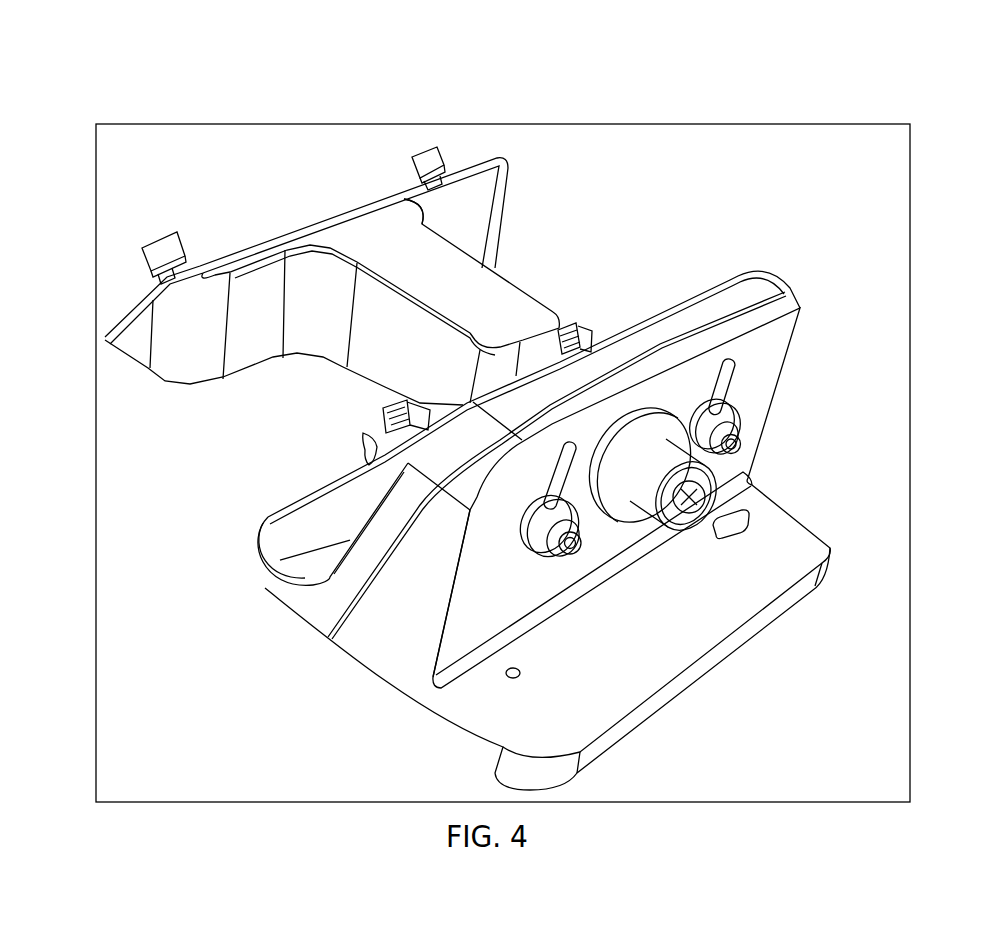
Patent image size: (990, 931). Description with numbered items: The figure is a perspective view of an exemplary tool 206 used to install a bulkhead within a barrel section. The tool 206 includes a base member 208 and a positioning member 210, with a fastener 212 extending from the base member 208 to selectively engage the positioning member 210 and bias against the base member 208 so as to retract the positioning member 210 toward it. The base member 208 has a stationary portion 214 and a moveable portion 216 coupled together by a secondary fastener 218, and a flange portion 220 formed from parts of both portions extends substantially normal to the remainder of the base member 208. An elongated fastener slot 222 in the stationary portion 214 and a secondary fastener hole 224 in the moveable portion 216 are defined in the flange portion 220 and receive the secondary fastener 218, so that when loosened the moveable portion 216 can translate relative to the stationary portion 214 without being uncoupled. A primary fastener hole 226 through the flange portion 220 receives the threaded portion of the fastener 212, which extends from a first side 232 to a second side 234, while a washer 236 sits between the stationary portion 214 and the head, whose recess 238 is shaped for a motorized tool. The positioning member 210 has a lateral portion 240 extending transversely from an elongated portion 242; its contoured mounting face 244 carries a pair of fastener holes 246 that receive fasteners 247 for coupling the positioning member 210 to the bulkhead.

The tool 206 is at (829, 104).
The base member 208 is at (828, 268).
The positioning member 210 is at (509, 140).
The fastener 212 is at (712, 346).
The stationary portion 214 is at (810, 552).
The moveable portion 216 is at (287, 531).
The secondary fastener 218 is at (742, 442).
The flange portion 220 is at (830, 308).
The fastener slot 222 is at (733, 388).
The secondary fastener hole 224 is at (380, 463).
The primary fastener hole 226 is at (666, 394).
The first side 232 is at (505, 590).
The second side 234 is at (694, 398).
The washer 236 is at (630, 520).
The recess 238 is at (690, 513).
The lateral portion 240 is at (353, 213).
The elongated portion 242 is at (488, 292).
The mounting face 244 is at (383, 213).
The fastener holes 246 is at (452, 185).
The fasteners 247 is at (427, 158).